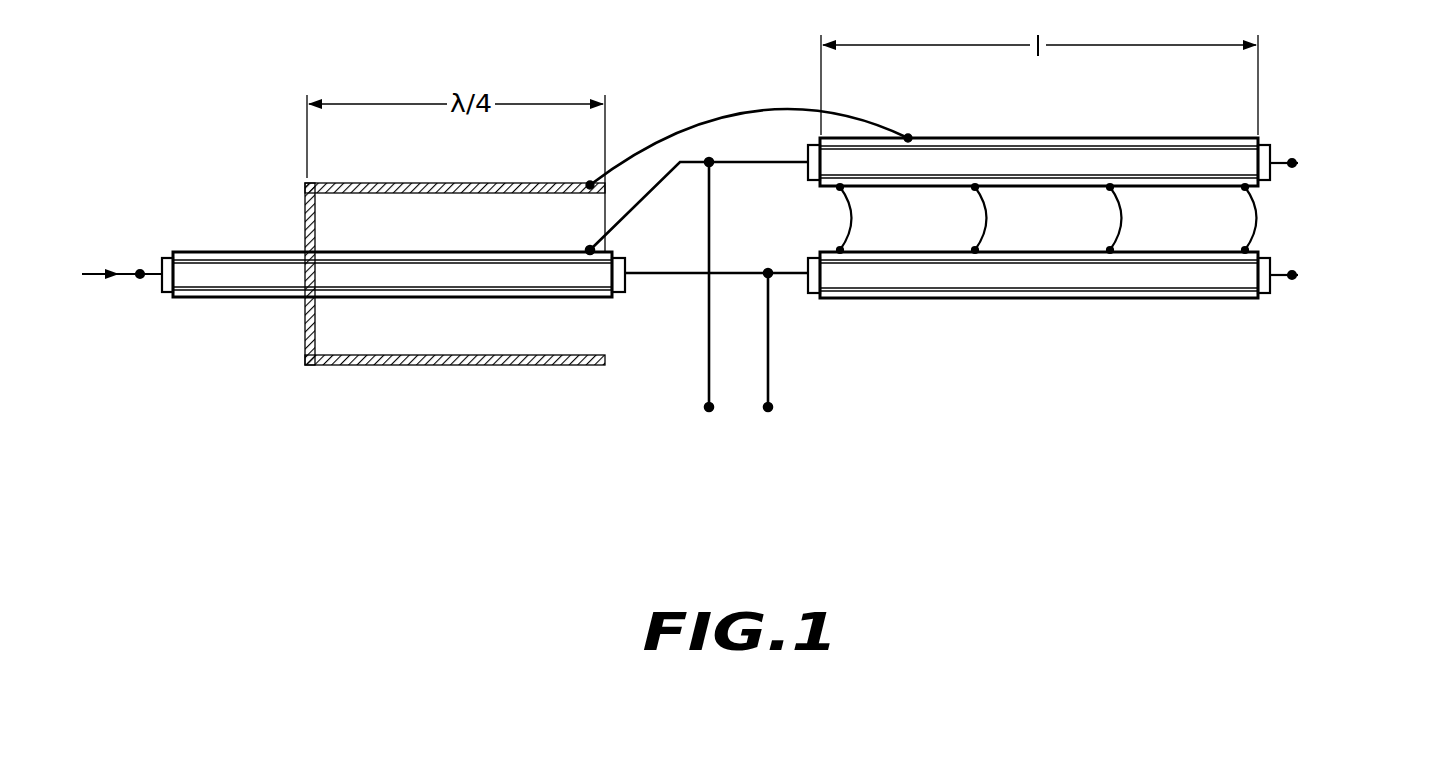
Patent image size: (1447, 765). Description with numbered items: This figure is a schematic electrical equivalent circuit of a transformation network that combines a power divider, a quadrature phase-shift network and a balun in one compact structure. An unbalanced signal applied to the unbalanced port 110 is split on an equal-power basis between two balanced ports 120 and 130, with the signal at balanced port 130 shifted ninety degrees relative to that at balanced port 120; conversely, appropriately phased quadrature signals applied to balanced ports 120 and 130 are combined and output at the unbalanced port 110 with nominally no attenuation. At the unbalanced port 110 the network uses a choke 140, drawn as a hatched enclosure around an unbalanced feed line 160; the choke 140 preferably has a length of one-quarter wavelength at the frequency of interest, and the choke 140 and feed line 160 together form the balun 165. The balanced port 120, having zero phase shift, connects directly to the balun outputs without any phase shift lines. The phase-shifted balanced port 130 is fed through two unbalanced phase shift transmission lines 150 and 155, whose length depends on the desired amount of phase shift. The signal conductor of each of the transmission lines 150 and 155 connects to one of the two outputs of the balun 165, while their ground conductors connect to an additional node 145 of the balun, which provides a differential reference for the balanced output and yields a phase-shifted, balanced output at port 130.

The unbalanced port 110 is at (129, 347).
The balanced port 120 is at (768, 416).
The balanced port 130 is at (1299, 163).
The choke 140 is at (375, 365).
The additional node 145 is at (590, 185).
The unbalanced phase shift transmission line 150 is at (988, 298).
The unbalanced phase shift transmission line 155 is at (992, 138).
The unbalanced feed line 160 is at (527, 297).
The balun 165 is at (431, 445).